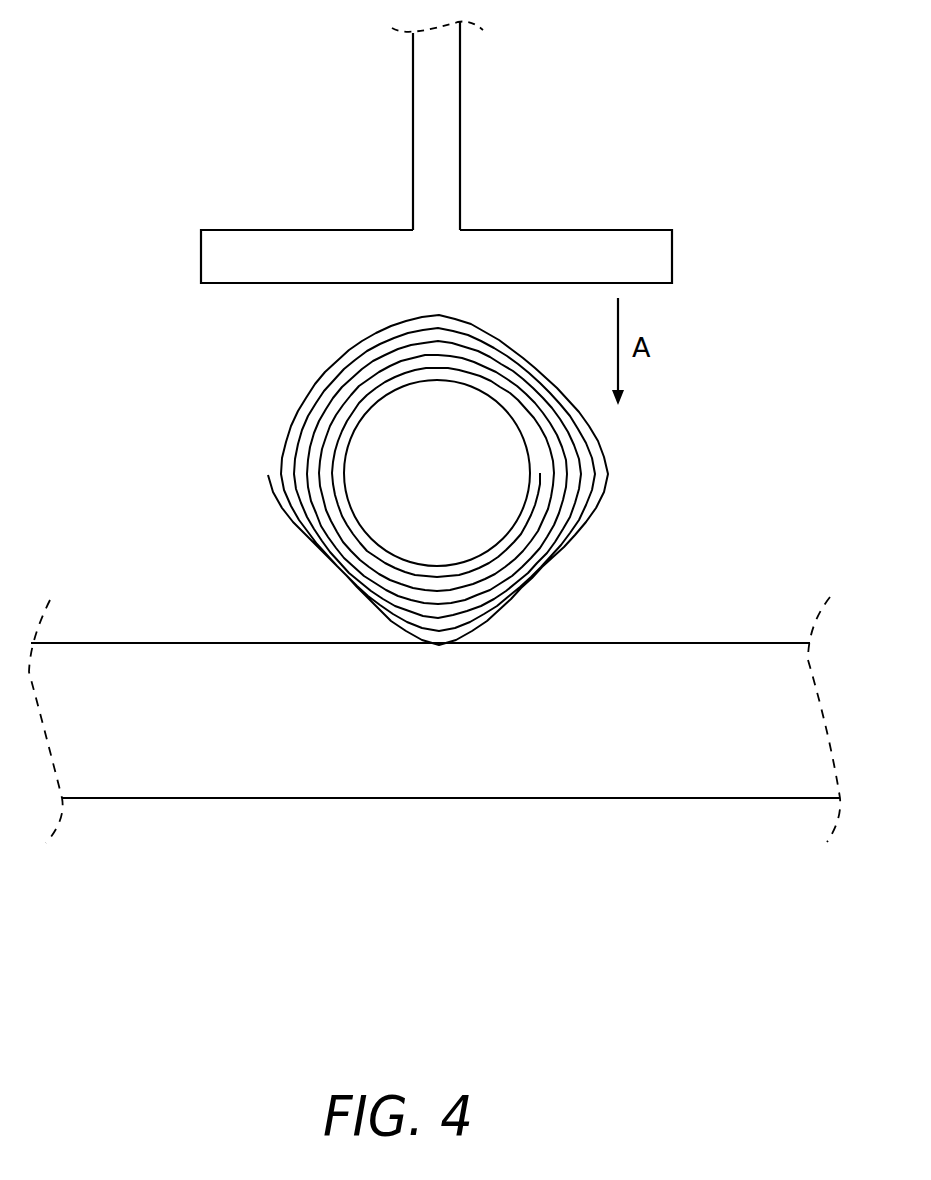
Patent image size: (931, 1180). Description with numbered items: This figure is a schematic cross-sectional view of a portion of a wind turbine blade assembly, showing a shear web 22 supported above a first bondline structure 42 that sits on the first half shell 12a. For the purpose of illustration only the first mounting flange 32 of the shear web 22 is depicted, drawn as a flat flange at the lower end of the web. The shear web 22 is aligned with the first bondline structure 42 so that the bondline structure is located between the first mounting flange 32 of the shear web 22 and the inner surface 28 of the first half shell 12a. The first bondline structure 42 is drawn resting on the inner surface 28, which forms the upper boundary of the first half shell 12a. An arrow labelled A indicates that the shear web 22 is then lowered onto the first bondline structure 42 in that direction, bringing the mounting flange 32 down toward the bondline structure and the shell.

The shear web 22 is at (478, 122).
The first mounting flange 32 is at (515, 247).
The first bondline structure 42 is at (278, 372).
The inner surface 28 is at (601, 638).
The first half shell 12a is at (300, 770).